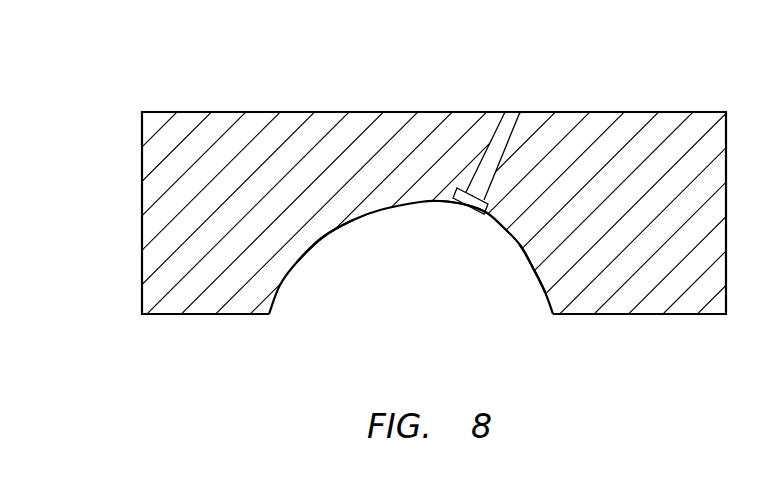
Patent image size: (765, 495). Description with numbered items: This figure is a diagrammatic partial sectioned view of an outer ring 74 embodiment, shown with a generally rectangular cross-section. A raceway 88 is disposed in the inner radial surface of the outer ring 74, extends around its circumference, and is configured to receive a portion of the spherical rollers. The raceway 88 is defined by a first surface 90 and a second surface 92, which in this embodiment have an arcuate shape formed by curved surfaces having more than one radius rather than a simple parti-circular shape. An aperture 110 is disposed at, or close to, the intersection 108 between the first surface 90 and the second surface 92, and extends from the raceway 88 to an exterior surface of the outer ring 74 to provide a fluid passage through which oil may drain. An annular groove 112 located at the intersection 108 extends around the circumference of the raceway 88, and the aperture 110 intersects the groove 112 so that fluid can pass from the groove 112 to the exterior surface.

The outer ring 74 is at (119, 205).
The raceway 88 is at (311, 302).
The first surface 90 is at (335, 243).
The second surface 92 is at (531, 276).
The intersection 108 is at (469, 203).
The aperture 110 is at (509, 111).
The annular groove 112 is at (490, 203).